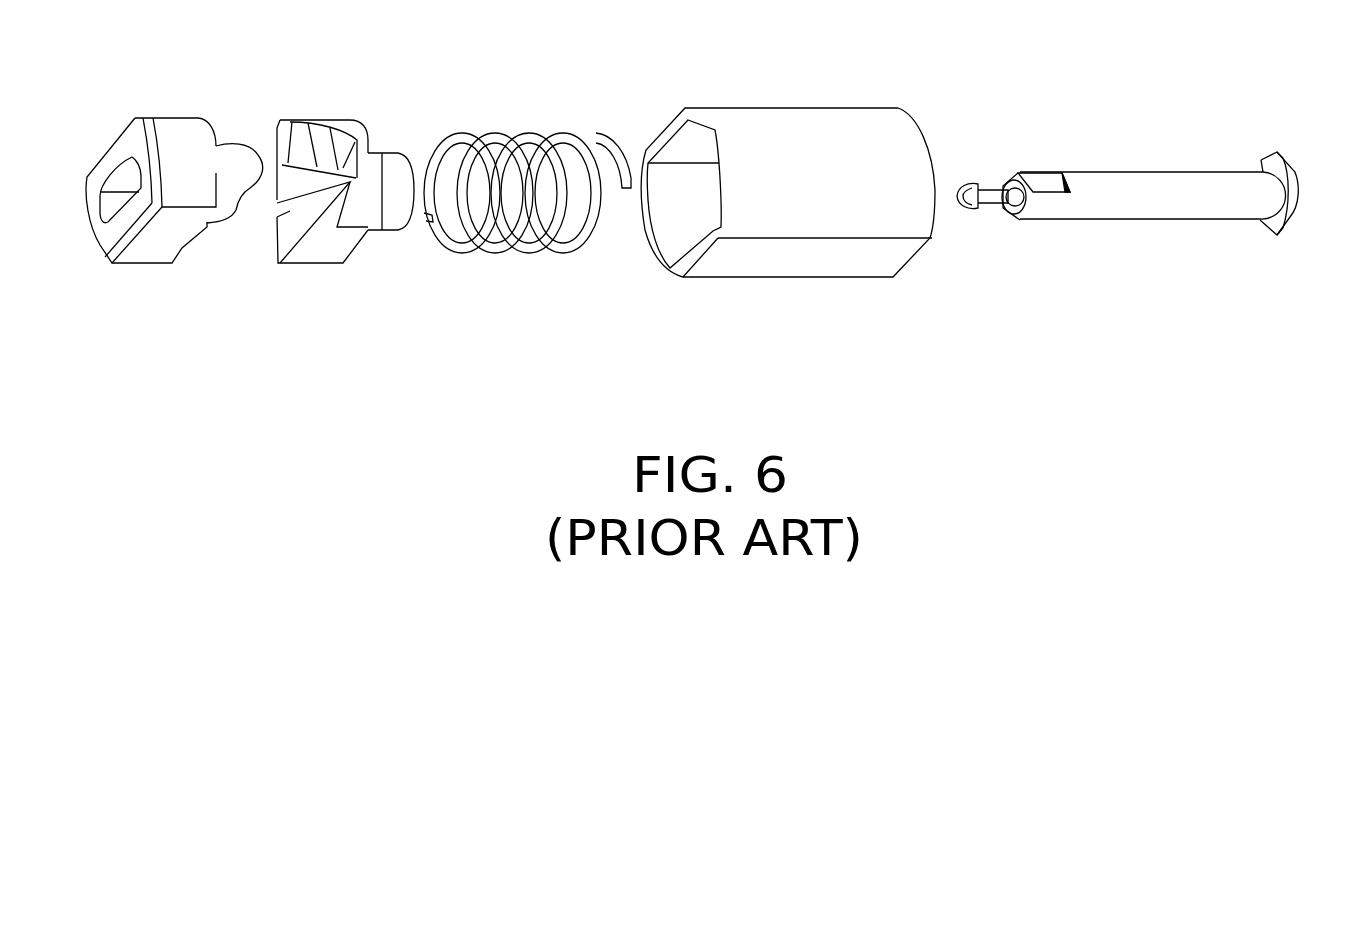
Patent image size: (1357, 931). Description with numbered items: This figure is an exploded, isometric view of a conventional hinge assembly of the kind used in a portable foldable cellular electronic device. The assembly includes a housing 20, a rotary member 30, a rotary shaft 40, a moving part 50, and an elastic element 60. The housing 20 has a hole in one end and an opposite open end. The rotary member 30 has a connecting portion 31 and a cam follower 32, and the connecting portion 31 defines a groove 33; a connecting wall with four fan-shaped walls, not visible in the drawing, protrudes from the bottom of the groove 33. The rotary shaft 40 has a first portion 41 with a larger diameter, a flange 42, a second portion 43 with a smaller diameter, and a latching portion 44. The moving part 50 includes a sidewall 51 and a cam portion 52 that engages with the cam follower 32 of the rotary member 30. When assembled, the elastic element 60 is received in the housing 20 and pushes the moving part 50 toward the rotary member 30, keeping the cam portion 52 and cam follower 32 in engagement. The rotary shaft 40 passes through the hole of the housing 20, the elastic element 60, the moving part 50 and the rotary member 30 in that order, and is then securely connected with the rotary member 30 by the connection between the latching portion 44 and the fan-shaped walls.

The housing 20 is at (778, 90).
The rotary member 30 is at (178, 103).
The connecting portion 31 is at (146, 130).
The cam follower 32 is at (233, 155).
The groove 33 is at (122, 182).
The rotary shaft 40 is at (1096, 162).
The first portion 41 is at (1210, 183).
The flange 42 is at (1283, 158).
The second portion 43 is at (990, 190).
The latching portion 44 is at (967, 183).
The moving part 50 is at (349, 113).
The sidewall 51 is at (352, 242).
The cam portion 52 is at (310, 227).
The elastic element 60 is at (506, 125).